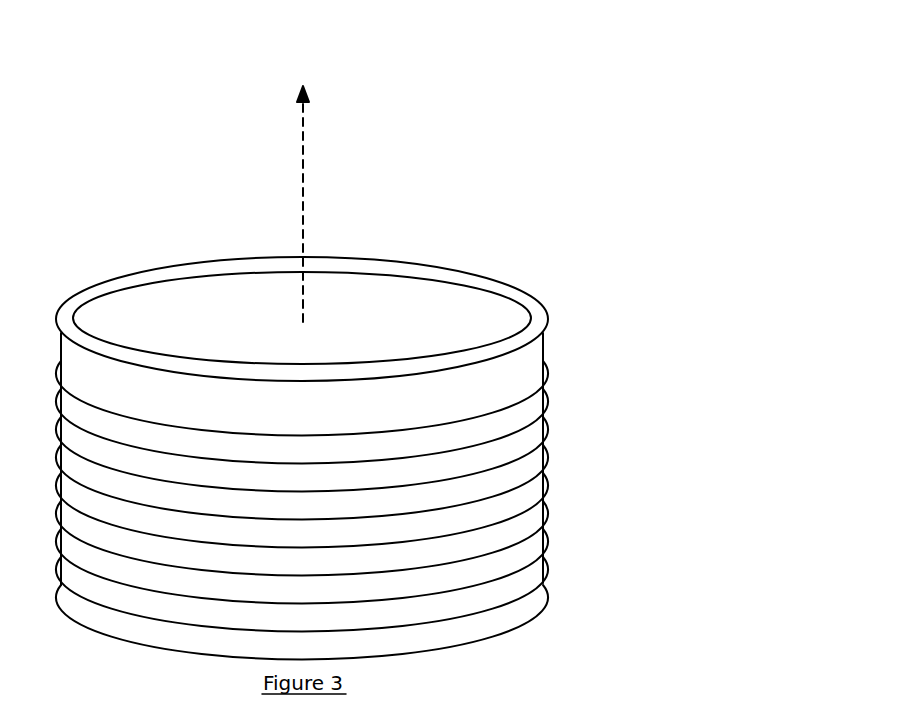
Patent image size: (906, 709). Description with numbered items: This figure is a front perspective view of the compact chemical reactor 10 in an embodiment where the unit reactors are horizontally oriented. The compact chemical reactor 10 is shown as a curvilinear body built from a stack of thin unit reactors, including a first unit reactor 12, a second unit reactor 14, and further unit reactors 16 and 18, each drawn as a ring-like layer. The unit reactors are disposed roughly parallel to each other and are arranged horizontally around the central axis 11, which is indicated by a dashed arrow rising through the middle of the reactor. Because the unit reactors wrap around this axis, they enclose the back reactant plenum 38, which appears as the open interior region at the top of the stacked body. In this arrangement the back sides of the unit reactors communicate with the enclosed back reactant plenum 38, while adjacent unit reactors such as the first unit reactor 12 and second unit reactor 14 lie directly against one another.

The compact chemical reactor 10 is at (186, 246).
The central axis 11 is at (307, 232).
The first unit reactor 12 is at (523, 467).
The second unit reactor 14 is at (523, 497).
The unit reactor 16 is at (523, 525).
The unit reactor 18 is at (523, 555).
The back reactant plenum 38 is at (410, 325).